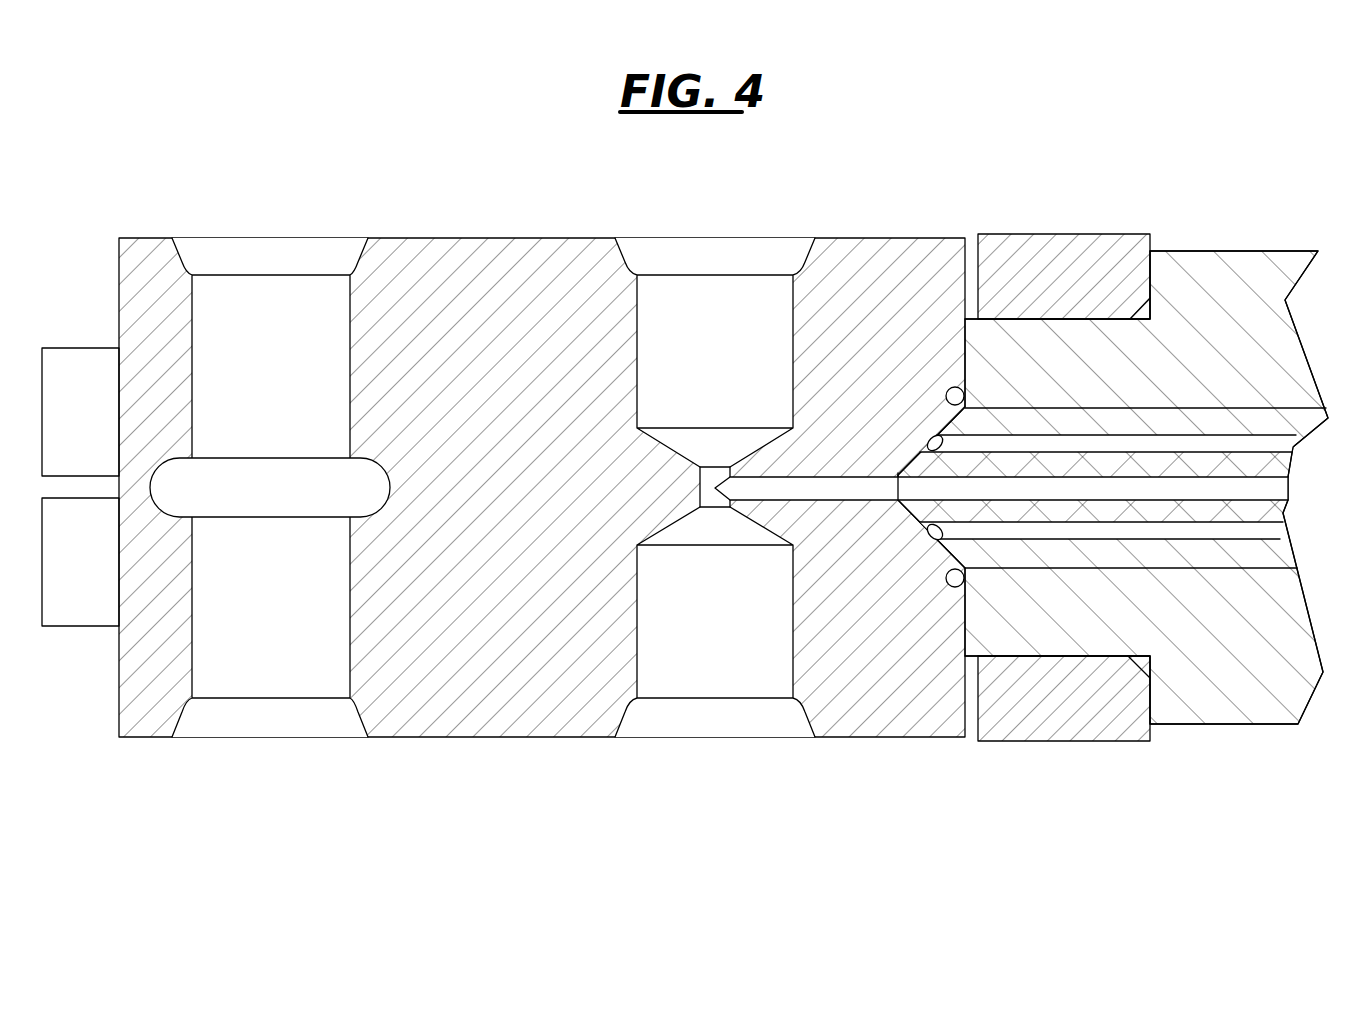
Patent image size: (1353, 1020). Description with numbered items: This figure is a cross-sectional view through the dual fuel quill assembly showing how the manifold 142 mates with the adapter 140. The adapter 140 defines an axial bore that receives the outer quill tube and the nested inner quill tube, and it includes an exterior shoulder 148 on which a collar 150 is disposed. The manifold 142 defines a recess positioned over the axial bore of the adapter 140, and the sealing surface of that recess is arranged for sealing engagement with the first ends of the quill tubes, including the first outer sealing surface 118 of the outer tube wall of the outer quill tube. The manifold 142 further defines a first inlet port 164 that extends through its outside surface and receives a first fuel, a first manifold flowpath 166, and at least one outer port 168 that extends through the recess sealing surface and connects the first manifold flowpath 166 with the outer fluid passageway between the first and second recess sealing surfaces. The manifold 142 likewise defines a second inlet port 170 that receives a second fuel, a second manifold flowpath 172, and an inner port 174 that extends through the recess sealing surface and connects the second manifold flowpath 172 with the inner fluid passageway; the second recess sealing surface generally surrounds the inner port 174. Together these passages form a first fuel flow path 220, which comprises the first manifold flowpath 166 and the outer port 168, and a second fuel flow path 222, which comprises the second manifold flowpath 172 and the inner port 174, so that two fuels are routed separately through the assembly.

The first outer sealing surface 118 is at (958, 432).
The adapter 140 is at (1230, 337).
The manifold 142 is at (495, 549).
The exterior shoulder 148 is at (1183, 275).
The collar 150 is at (1068, 277).
The first inlet port 164 is at (245, 238).
The first manifold flowpath 166 is at (230, 475).
The outer port 168 is at (930, 440).
The second inlet port 170 is at (705, 238).
The second manifold flowpath 172 is at (728, 308).
The inner port 174 is at (898, 487).
The first fuel flow path 220 is at (297, 311).
The second fuel flow path 222 is at (679, 306).